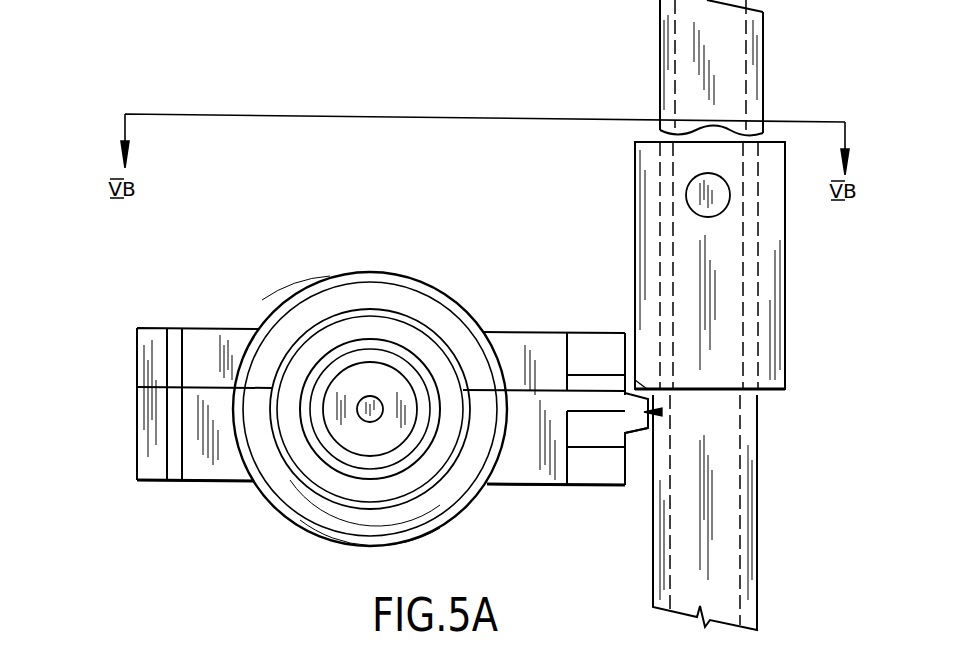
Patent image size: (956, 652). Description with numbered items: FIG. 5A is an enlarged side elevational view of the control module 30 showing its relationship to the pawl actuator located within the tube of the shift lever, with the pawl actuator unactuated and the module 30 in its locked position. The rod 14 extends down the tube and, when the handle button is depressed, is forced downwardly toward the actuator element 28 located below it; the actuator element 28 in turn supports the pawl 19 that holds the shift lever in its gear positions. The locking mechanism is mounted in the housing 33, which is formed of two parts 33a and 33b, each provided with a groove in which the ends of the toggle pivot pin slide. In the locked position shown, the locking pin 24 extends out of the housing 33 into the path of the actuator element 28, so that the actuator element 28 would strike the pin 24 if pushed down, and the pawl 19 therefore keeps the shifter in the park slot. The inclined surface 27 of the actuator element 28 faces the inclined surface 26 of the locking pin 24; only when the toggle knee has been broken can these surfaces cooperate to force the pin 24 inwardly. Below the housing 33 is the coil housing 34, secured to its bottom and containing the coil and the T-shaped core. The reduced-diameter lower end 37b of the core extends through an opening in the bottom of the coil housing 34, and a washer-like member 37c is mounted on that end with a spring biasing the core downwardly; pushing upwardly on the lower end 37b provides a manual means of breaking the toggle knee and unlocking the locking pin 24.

The rod 14 is at (733, 48).
The pawl 19 is at (716, 202).
The locking pin 24 is at (662, 412).
The inclined surface 26 is at (643, 432).
The inclined surface 27 is at (647, 382).
The actuator element 28 is at (772, 310).
The module 30 is at (270, 536).
The housing 33 is at (148, 435).
The housing part 33a is at (209, 345).
The housing part 33b is at (202, 470).
The coil housing 34 is at (445, 293).
The lower end of core 37b is at (363, 415).
The washer-like member 37c is at (388, 437).